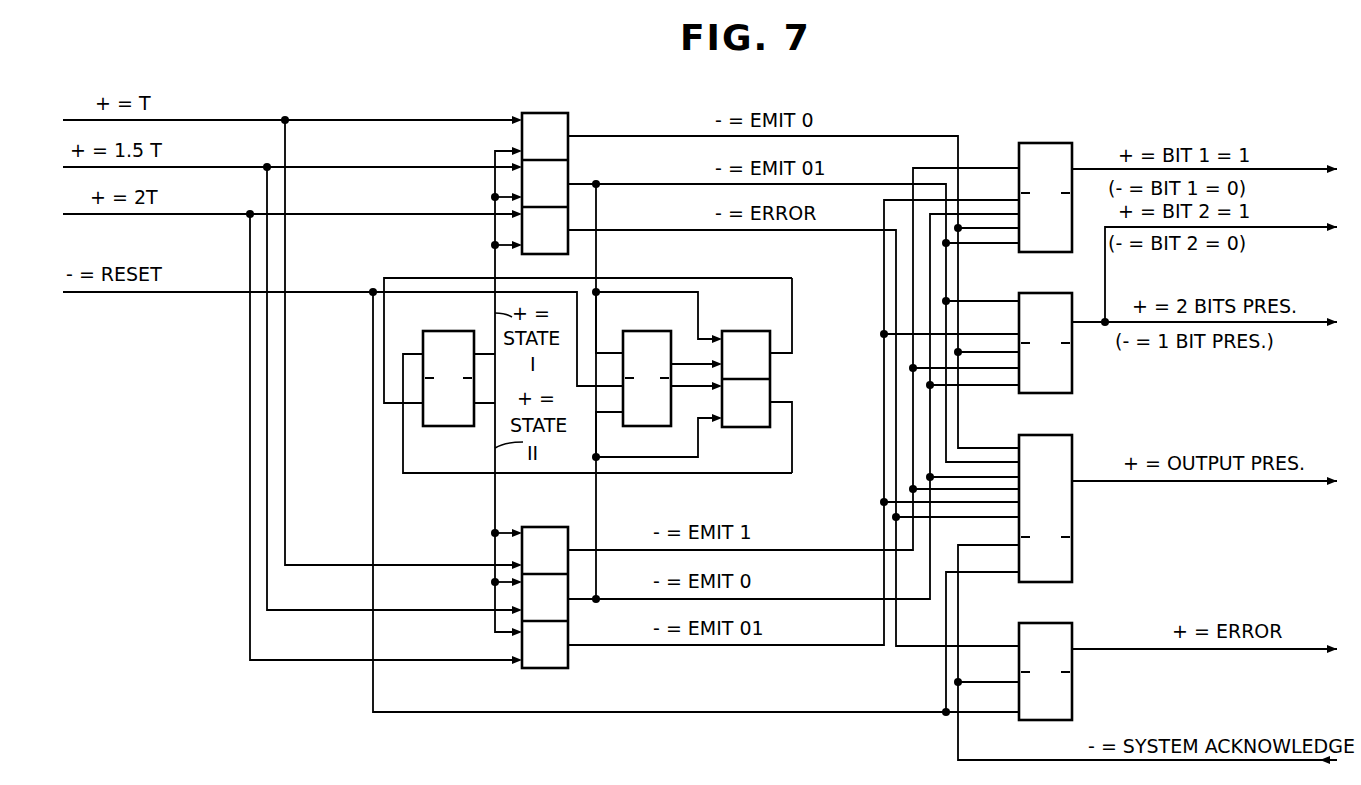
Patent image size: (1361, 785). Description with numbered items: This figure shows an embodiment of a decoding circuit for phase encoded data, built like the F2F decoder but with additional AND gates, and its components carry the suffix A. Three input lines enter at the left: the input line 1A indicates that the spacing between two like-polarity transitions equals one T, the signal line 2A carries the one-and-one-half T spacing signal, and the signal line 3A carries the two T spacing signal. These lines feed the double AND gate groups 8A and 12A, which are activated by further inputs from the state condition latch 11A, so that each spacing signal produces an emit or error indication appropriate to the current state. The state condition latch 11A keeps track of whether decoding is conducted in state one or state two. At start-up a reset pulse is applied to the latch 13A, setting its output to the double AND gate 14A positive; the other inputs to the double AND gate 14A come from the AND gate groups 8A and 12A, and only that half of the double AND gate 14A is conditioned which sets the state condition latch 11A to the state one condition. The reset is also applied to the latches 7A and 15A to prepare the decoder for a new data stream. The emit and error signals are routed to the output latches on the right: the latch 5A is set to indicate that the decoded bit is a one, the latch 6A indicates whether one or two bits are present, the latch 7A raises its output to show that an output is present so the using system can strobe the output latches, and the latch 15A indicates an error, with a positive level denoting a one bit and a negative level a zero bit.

The input line 1A is at (365, 121).
The signal line 2A is at (365, 168).
The signal line 3A is at (360, 215).
The AND gate 8A is at (528, 113).
The state condition latch 11A is at (439, 331).
The latch 13A is at (646, 331).
The double AND gate 14A is at (751, 331).
The AND gate 12A is at (540, 527).
The latch 5A is at (1030, 143).
The latch 6A is at (1025, 293).
The latch 7A is at (1021, 435).
The latch 15A is at (1021, 623).